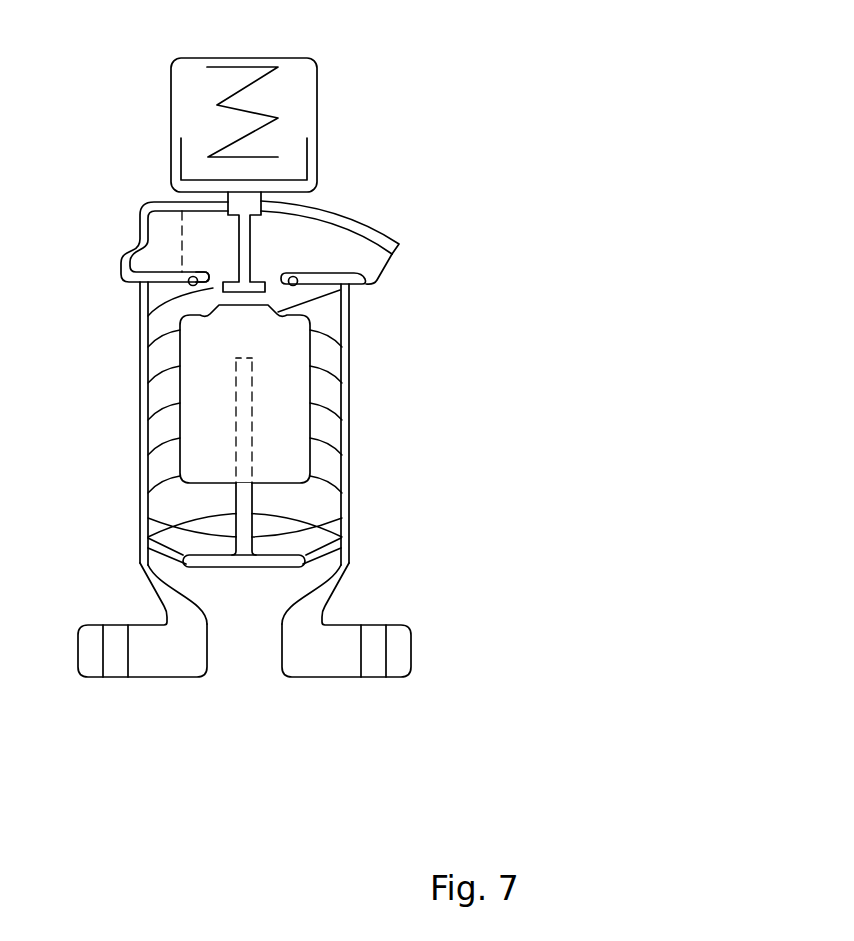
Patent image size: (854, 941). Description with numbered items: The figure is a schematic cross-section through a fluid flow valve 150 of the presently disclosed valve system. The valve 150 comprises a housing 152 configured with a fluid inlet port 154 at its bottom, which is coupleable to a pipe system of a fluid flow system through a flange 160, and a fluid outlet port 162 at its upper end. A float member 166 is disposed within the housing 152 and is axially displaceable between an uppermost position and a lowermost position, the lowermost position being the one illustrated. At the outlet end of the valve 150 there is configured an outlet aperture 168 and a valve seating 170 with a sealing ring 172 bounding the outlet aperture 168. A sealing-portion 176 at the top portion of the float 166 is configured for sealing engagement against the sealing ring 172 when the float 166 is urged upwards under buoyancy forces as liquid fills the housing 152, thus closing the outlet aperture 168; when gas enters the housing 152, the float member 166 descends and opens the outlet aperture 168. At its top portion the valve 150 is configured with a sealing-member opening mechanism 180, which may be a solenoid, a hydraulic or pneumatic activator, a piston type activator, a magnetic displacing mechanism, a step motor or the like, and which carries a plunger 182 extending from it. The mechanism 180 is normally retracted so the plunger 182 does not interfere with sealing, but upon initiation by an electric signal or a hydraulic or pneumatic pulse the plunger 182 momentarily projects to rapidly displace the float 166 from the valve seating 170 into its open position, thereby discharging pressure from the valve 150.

The fluid flow valve 150 is at (302, 393).
The housing 152 is at (345, 465).
The fluid inlet port 154 is at (245, 652).
The flange 160 is at (397, 648).
The fluid outlet port 162 is at (395, 260).
The float member 166 is at (213, 387).
The outlet aperture 168 is at (270, 283).
The valve seating 170 is at (190, 285).
The sealing ring 172 is at (217, 286).
The sealing-portion 176 is at (272, 288).
The sealing-member opening mechanism 180 is at (318, 92).
The plunger 182 is at (220, 235).